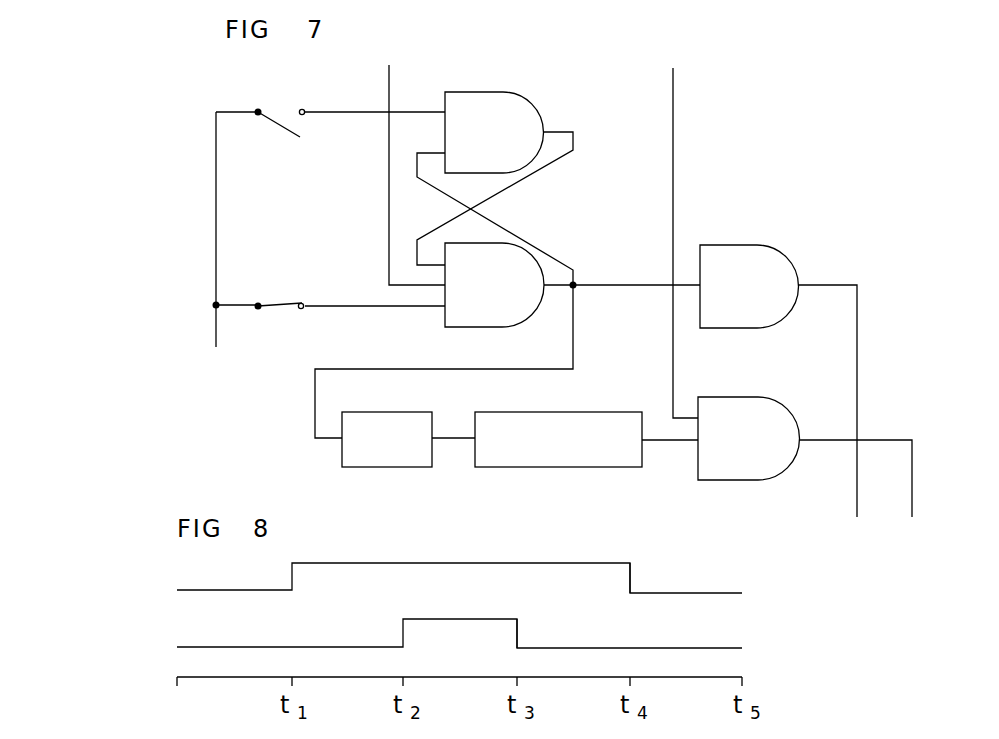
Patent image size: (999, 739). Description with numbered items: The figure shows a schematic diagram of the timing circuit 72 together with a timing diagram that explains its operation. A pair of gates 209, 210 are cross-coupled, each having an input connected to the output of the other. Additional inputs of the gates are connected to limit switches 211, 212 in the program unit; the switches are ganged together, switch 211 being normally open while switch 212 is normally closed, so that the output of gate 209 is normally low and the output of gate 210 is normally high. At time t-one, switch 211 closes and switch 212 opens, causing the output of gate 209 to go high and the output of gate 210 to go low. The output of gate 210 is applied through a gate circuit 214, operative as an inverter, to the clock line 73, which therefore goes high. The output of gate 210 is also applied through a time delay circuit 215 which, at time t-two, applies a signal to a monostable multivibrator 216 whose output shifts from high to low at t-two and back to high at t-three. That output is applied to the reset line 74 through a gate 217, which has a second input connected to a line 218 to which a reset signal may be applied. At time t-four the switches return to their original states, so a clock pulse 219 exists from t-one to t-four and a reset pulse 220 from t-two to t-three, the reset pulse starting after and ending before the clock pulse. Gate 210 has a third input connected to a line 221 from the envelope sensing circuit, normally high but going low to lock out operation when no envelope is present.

In FIG. 7, the timing circuit 72 is at (717, 37).
In FIG. 7, the clock line 73 is at (857, 502).
In FIG. 8, the clock line 73 is at (435, 584).
In FIG. 7, the reset line 74 is at (912, 505).
In FIG. 8, the reset line 74 is at (435, 639).
In FIG. 7, the gate 209 is at (507, 100).
In FIG. 7, the gate 210 is at (510, 257).
In FIG. 7, the limit switch 211 is at (281, 120).
In FIG. 7, the limit switch 212 is at (280, 302).
In FIG. 7, the gate circuit 214 is at (754, 253).
In FIG. 7, the time delay circuit 215 is at (413, 420).
In FIG. 7, the monostable multivibrator 216 is at (585, 412).
In FIG. 7, the gate 217 is at (753, 408).
In FIG. 7, the line 218 is at (673, 82).
In FIG. 8, the clock pulse 219 is at (633, 583).
In FIG. 8, the reset pulse 220 is at (519, 637).
In FIG. 7, the line 221 is at (389, 76).